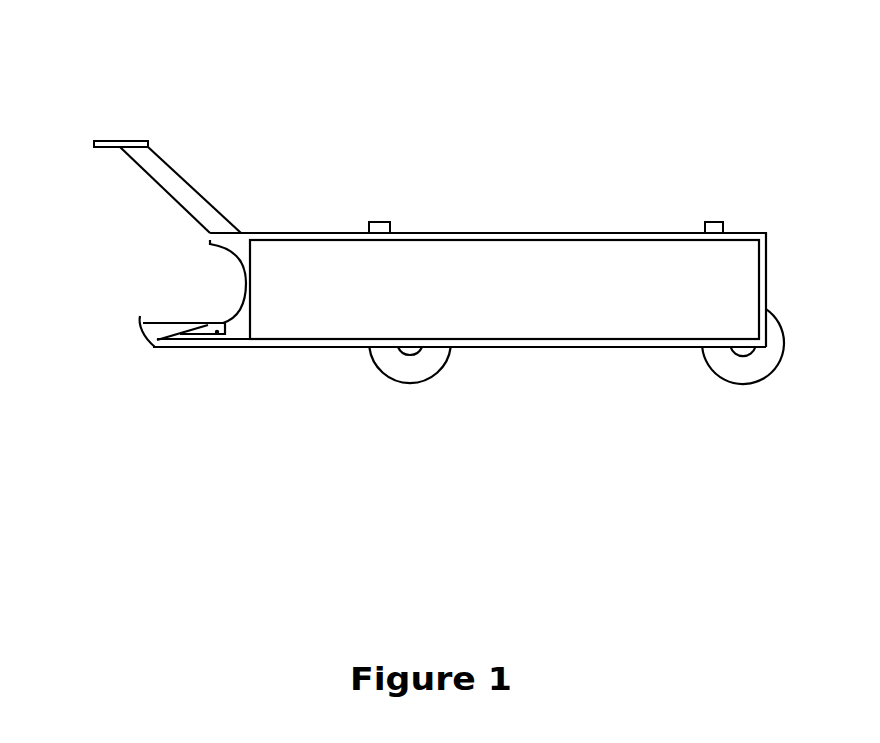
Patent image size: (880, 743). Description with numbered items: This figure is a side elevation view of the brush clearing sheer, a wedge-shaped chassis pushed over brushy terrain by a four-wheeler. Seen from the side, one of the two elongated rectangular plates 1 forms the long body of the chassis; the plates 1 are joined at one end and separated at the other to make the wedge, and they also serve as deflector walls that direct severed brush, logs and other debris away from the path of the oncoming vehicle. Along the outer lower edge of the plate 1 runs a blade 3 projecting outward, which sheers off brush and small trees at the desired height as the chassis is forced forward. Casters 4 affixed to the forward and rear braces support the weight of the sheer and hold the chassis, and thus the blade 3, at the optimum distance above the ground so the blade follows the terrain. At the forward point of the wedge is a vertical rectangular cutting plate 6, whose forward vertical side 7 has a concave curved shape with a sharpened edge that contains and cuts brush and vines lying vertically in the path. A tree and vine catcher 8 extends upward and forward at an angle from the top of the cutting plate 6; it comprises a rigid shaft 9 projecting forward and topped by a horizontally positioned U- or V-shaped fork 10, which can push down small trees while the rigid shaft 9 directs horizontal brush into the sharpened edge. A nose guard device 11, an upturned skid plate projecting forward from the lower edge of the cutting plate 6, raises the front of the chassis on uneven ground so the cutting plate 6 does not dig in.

The rectangular plate 1 is at (512, 280).
The blade 3 is at (322, 353).
The casters 4 is at (460, 365).
The cutting plate 6 is at (253, 225).
The forward vertical side 7 is at (235, 282).
The tree and vine catcher 8 is at (180, 197).
The rigid shaft 9 is at (183, 165).
The fork 10 is at (125, 132).
The nose guard device 11 is at (137, 335).